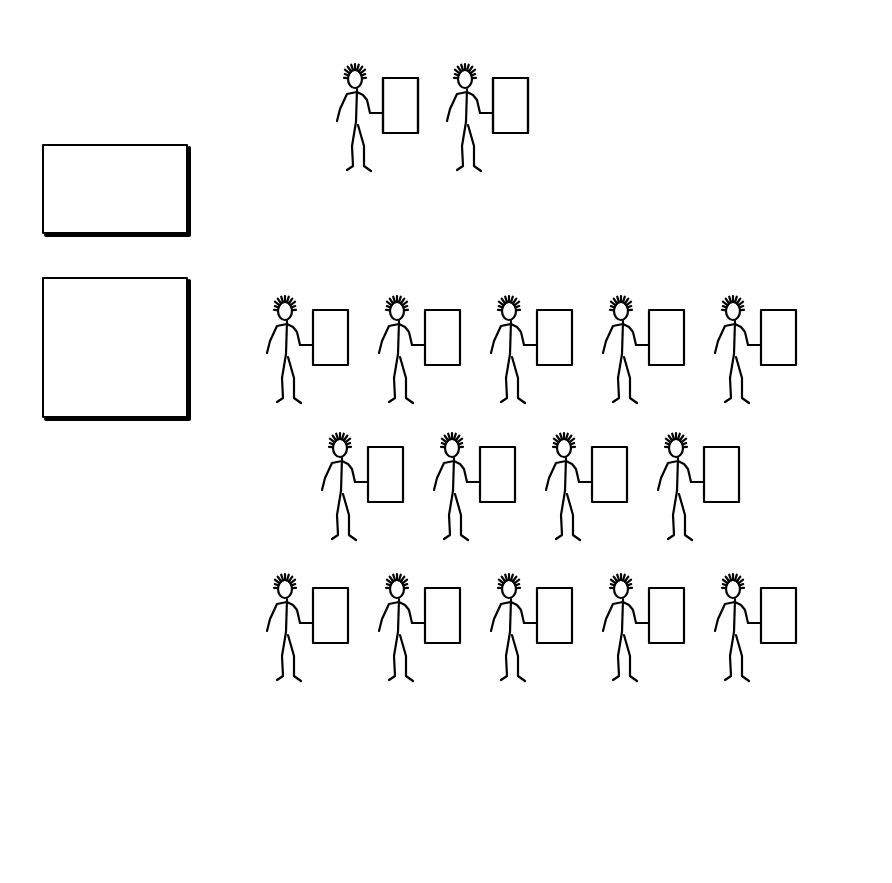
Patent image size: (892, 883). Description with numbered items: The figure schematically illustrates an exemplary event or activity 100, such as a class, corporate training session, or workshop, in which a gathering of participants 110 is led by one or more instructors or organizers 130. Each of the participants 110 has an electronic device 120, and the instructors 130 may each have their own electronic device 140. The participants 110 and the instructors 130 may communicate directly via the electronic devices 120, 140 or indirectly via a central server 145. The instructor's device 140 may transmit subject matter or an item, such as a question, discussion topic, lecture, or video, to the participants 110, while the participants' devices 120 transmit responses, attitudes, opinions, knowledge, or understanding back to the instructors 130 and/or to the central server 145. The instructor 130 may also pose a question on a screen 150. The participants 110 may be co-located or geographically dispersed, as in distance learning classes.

The event or activity 100 is at (645, 84).
The participants 110 is at (733, 678).
The electronic device 120 is at (773, 310).
The instructors or organizers 130 is at (362, 57).
The electronic device 140 is at (402, 132).
The central server 145 is at (116, 348).
The screen 150 is at (116, 190).